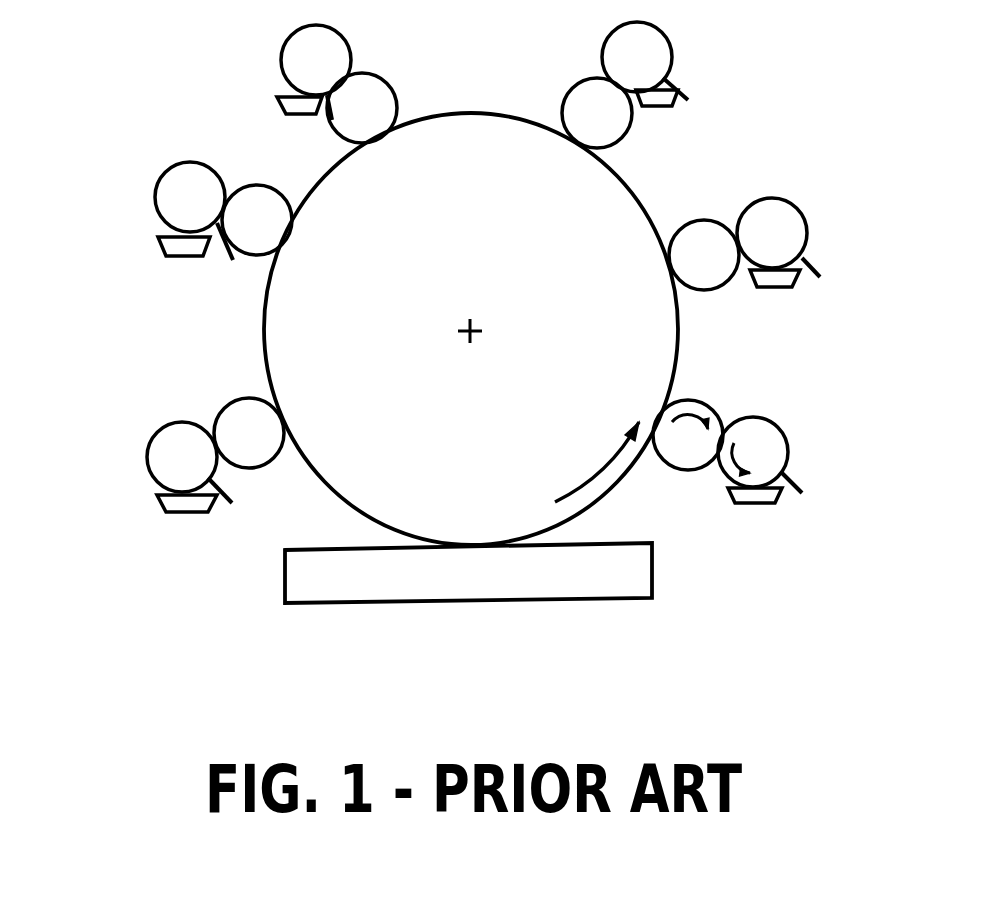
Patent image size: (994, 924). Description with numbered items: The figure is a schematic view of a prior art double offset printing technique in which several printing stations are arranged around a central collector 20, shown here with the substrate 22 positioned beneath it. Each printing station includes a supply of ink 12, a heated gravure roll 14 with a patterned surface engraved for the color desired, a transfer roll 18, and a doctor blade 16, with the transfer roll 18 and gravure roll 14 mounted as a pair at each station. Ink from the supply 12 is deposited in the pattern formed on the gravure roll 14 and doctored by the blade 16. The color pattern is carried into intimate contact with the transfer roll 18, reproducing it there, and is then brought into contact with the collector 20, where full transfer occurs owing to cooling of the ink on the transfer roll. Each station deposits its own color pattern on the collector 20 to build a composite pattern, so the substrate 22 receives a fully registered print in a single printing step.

The supply of ink 12 is at (785, 282).
The heated gravure roll 14 is at (793, 205).
The doctor blade 16 is at (807, 260).
The transfer roll 18 is at (715, 217).
The collector 20 is at (471, 329).
The substrate 22 is at (367, 605).